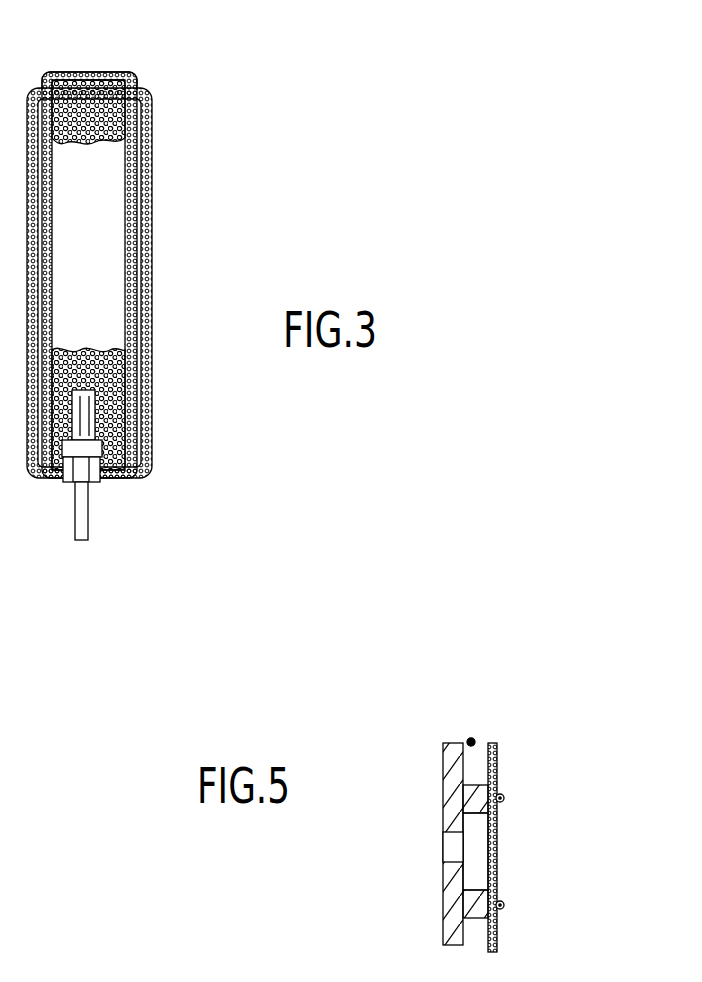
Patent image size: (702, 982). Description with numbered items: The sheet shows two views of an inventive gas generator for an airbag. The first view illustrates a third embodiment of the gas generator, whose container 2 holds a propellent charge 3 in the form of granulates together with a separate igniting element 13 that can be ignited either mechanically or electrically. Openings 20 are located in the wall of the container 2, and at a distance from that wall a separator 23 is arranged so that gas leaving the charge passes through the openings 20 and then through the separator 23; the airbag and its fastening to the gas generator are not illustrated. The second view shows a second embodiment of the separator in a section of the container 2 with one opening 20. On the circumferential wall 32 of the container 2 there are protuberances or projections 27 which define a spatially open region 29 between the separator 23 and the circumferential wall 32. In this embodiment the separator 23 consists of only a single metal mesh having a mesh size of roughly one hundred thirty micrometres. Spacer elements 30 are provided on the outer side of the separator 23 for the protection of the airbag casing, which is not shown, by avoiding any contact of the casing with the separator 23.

In FIG. 3, the container 2 is at (115, 72).
In FIG. 5, the container 2 is at (443, 930).
In FIG. 3, the propellent charge 3 is at (60, 77).
In FIG. 3, the igniting element 13 is at (104, 486).
In FIG. 3, the openings 20 is at (137, 207).
In FIG. 5, the openings 20 is at (455, 843).
In FIG. 3, the separator 23 is at (148, 133).
In FIG. 5, the separator 23 is at (497, 772).
In FIG. 5, the projections 27 is at (477, 783).
In FIG. 5, the spatially open region 29 is at (477, 867).
In FIG. 5, the spacer elements 30 is at (504, 801).
In FIG. 5, the circumferential wall 32 is at (473, 740).